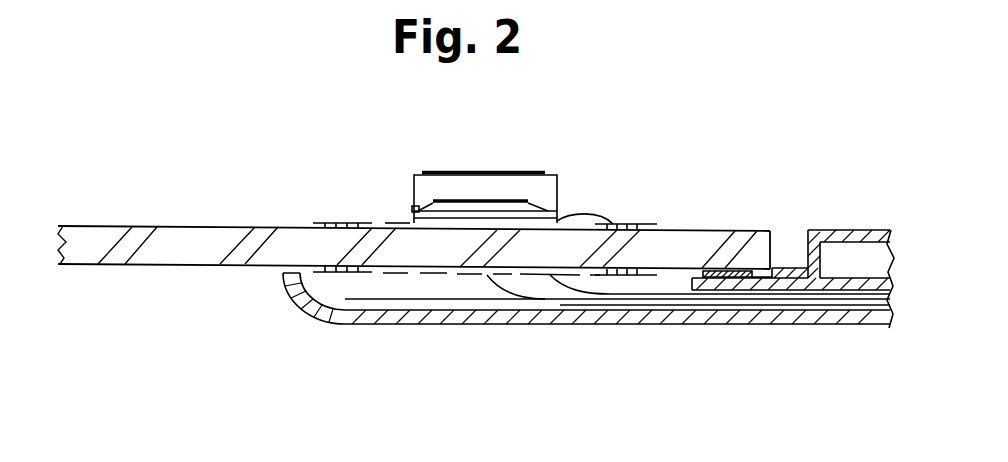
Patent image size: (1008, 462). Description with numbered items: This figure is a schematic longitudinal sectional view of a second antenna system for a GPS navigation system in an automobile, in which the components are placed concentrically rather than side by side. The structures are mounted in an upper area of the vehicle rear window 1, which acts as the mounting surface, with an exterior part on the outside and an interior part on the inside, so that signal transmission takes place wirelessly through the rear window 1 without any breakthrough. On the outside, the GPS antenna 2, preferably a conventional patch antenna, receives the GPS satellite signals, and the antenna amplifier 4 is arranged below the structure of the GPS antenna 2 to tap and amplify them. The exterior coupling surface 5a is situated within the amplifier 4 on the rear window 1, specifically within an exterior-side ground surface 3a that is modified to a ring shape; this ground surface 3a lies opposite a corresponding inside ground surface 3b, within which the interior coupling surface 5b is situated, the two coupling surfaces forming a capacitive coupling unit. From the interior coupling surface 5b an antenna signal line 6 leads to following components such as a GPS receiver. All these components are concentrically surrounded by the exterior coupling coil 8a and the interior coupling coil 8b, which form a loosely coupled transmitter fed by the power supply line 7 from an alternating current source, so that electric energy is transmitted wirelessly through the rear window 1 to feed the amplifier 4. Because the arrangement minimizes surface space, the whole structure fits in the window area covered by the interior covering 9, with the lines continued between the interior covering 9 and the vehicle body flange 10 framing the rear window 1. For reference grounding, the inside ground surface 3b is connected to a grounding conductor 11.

The vehicle rear window 1 is at (145, 252).
The GPS antenna 2 is at (480, 191).
The exterior-side ground surface 3a is at (560, 220).
The inside ground surface 3b is at (538, 276).
The antenna amplifier 4 is at (525, 201).
The exterior coupling surface 5a is at (413, 208).
The interior coupling surface 5b is at (468, 276).
The antenna signal line 6 is at (512, 292).
The power supply line 7 is at (660, 297).
The exterior coupling coil 8a is at (342, 222).
The interior coupling coil 8b is at (342, 274).
The interior covering 9 is at (287, 292).
The vehicle body flange 10 is at (800, 282).
The grounding conductor 11 is at (575, 297).